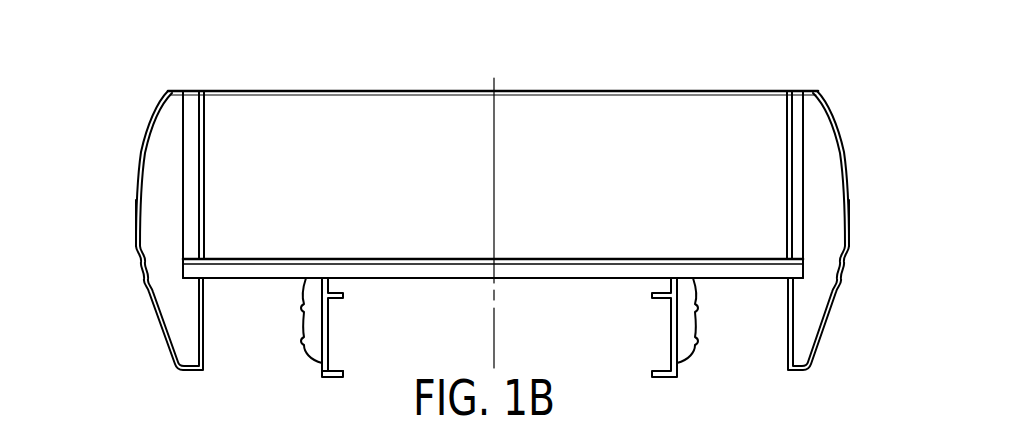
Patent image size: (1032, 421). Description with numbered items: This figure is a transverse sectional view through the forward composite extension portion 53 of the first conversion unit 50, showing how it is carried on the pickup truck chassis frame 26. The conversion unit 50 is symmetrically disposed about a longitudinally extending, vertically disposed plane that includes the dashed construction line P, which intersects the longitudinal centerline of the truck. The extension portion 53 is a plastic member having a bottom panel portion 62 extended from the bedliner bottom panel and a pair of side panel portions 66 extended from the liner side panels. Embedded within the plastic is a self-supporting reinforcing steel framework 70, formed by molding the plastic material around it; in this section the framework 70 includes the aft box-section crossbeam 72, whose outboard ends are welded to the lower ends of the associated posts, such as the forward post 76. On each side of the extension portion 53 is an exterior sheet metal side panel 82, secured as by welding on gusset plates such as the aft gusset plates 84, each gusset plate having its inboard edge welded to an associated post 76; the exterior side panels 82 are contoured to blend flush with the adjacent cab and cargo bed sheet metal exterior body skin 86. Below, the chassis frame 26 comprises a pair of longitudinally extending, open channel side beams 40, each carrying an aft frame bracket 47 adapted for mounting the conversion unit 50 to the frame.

The first conversion unit 50 is at (601, 77).
The forward composite extension portion 53 is at (451, 84).
The aft gusset plate 84 is at (163, 152).
The exterior sheet metal side panel 82 is at (148, 306).
The cargo bed sheet metal exterior body skin 86 is at (183, 137).
The side panel portion 66 is at (205, 173).
The forward post 76 is at (192, 215).
The bottom panel portion 62 is at (436, 258).
The reinforcing steel framework 70 is at (469, 286).
The aft box-section crossbeam 72 is at (562, 270).
The pickup truck chassis frame 26 is at (340, 320).
The side beam 40 is at (331, 366).
The aft frame bracket 47 is at (306, 282).
The dashed construction line P is at (496, 337).